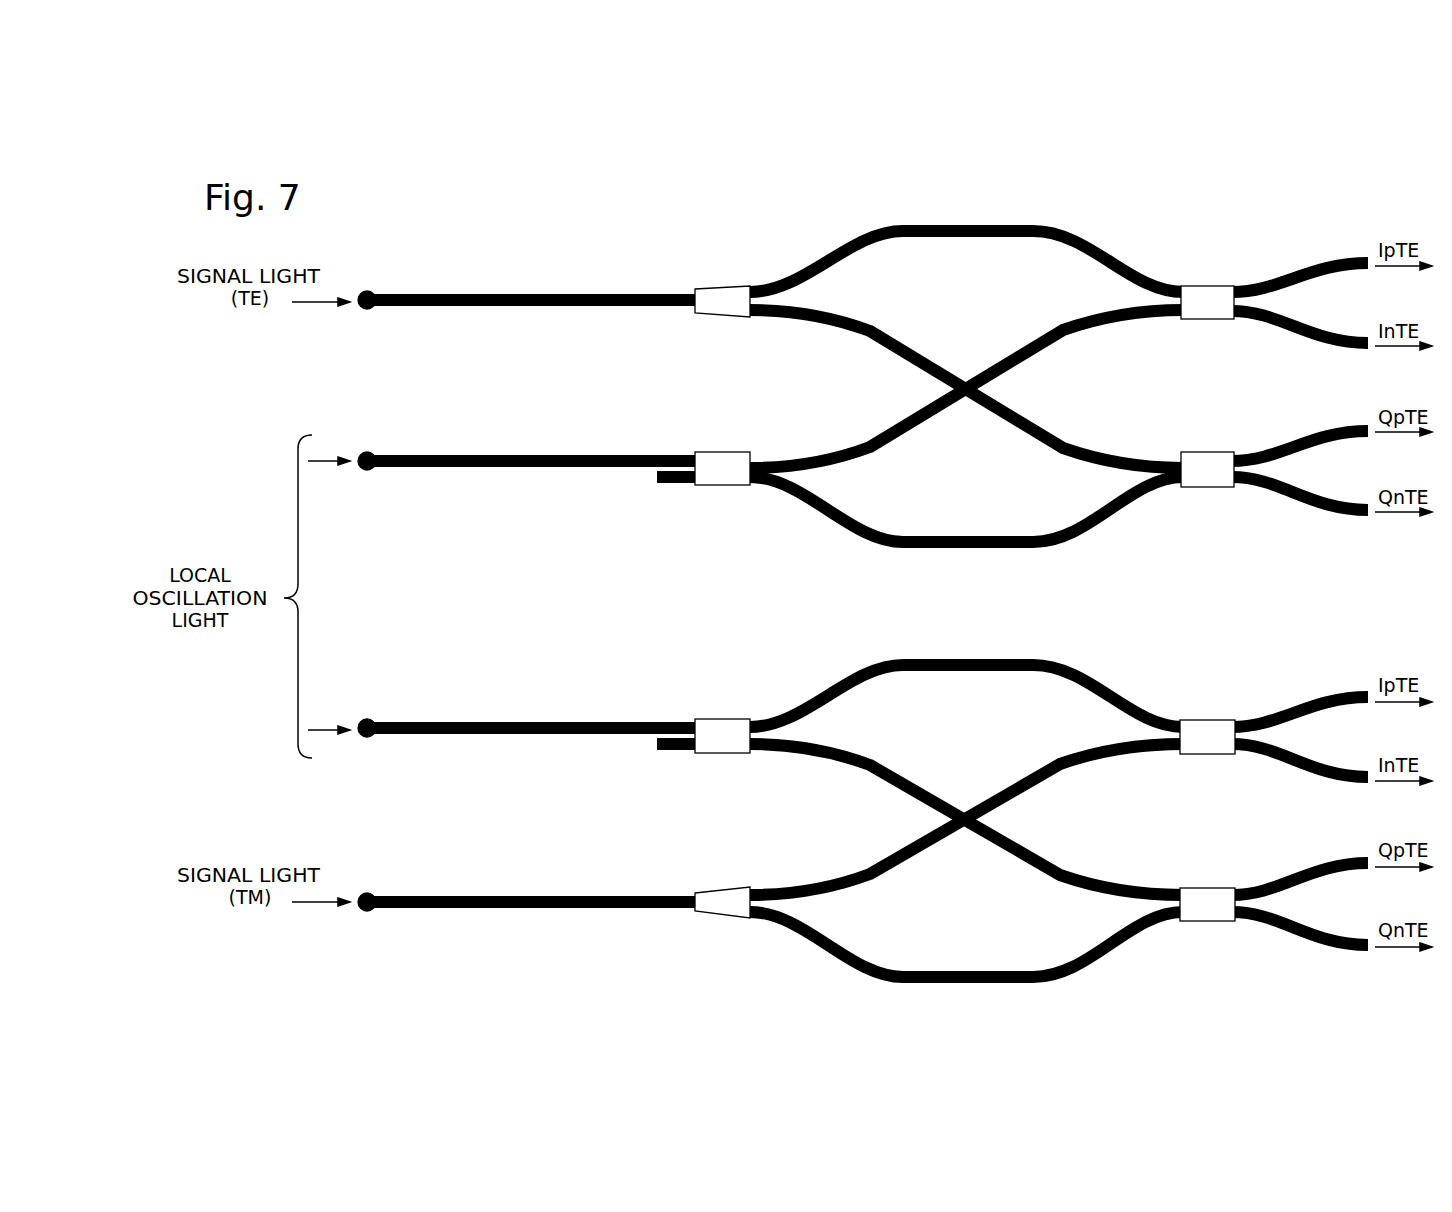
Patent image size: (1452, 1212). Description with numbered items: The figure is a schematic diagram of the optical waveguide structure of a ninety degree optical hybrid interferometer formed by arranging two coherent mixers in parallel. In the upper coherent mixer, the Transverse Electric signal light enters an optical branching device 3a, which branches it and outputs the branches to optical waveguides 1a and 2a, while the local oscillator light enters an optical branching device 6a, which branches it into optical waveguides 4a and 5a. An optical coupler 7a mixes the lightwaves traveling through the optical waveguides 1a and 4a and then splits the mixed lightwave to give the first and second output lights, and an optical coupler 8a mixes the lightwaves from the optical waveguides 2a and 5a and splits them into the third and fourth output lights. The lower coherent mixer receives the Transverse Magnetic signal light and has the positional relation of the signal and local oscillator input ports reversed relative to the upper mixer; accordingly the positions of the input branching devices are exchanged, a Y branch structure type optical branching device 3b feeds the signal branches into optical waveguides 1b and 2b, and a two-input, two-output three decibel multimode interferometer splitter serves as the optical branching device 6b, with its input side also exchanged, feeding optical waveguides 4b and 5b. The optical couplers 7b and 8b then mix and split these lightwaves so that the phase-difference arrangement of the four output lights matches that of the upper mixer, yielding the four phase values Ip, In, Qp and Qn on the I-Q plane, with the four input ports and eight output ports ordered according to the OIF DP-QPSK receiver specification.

The optical waveguide 1a is at (953, 222).
The optical waveguide 2a is at (898, 333).
The optical branching device 3a is at (722, 288).
The optical waveguide 4a is at (858, 430).
The optical waveguide 5a is at (953, 536).
The optical branching device 6a is at (722, 451).
The optical coupler 7a is at (1212, 285).
The optical coupler 8a is at (1212, 451).
The optical waveguide 1b is at (953, 970).
The optical waveguide 2b is at (860, 862).
The optical branching device 3b is at (722, 886).
The optical waveguide 4b is at (898, 768).
The optical waveguide 5b is at (953, 659).
The optical branching device 6b is at (722, 718).
The optical coupler 7b is at (1212, 887).
The optical coupler 8b is at (1212, 719).